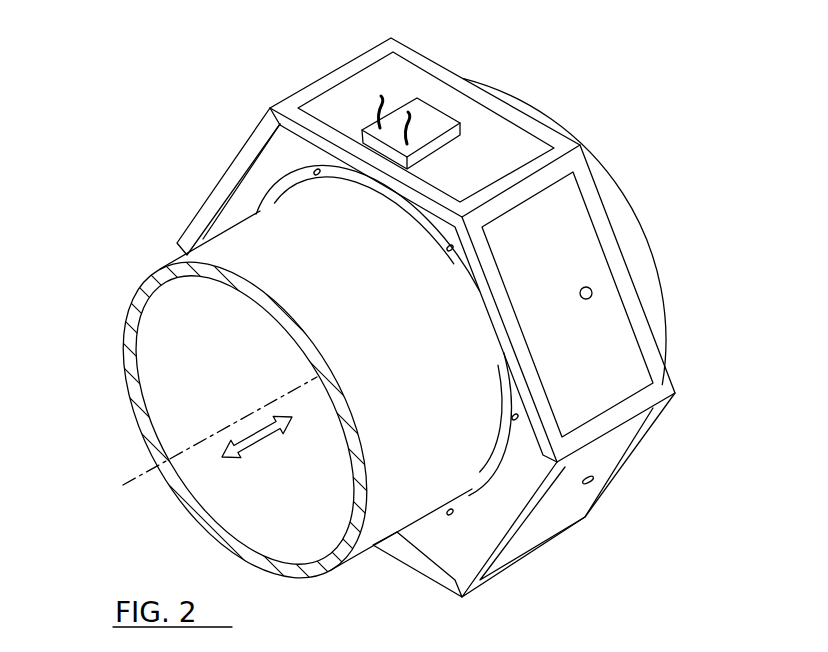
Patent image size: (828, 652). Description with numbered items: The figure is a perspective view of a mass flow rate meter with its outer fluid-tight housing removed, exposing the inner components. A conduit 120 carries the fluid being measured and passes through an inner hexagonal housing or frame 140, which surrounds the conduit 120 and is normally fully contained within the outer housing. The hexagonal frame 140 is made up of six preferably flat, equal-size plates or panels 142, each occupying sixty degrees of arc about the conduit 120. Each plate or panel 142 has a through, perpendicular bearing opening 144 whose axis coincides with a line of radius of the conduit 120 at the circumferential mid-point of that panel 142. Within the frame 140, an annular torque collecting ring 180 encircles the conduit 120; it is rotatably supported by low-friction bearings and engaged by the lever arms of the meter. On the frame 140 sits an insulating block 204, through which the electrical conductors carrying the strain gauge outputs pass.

The conduit 120 is at (188, 402).
The hexagonal housing or frame 140 is at (456, 317).
The plates or panels 142 is at (518, 142).
The bearing opening 144 is at (592, 291).
The torque collecting ring 180 is at (475, 505).
The insulating block 204 is at (430, 118).